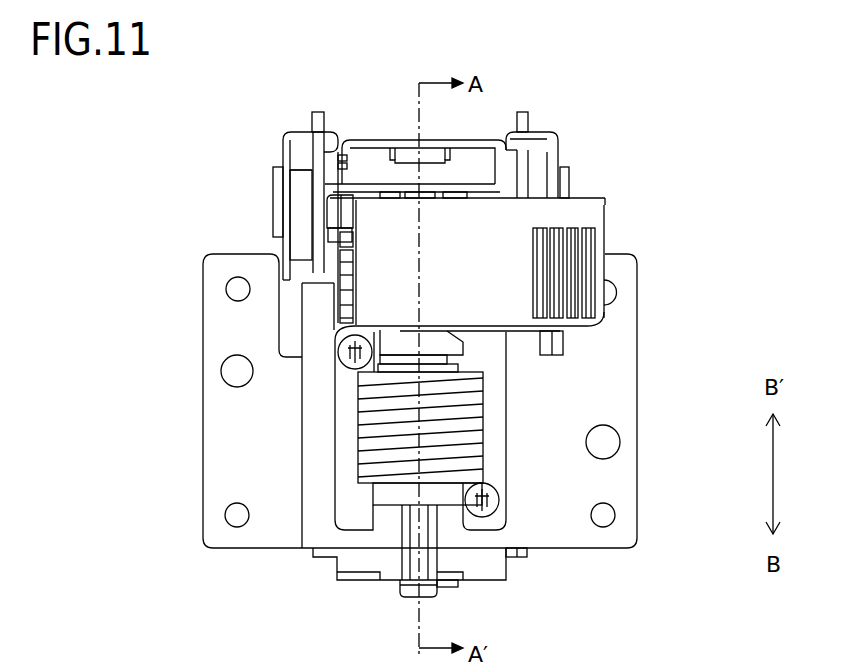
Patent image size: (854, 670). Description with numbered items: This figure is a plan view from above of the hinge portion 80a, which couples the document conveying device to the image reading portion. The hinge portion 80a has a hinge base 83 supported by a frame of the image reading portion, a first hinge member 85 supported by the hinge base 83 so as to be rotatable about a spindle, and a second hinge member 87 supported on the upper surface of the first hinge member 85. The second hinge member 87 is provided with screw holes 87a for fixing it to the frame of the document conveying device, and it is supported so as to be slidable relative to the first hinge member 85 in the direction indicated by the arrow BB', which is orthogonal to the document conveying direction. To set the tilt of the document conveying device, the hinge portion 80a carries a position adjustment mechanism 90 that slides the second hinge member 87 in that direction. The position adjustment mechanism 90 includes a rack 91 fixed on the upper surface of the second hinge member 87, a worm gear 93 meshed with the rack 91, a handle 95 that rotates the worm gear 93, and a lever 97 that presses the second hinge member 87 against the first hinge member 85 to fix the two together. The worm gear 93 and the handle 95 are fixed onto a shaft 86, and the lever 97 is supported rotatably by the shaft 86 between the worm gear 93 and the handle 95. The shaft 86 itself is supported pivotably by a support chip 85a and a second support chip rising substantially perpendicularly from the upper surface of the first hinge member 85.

The hinge portion 80a is at (592, 139).
The hinge base 83 is at (283, 150).
The first hinge member 85 is at (487, 560).
The support chip 85a is at (353, 582).
The shaft 86 is at (410, 547).
The second hinge member 87 is at (620, 370).
The screw holes 87a is at (240, 288).
The position adjustment mechanism 90 is at (305, 368).
The rack 91 is at (493, 425).
The worm gear 93 is at (377, 437).
The handle 95 is at (337, 212).
The lever 97 is at (577, 215).